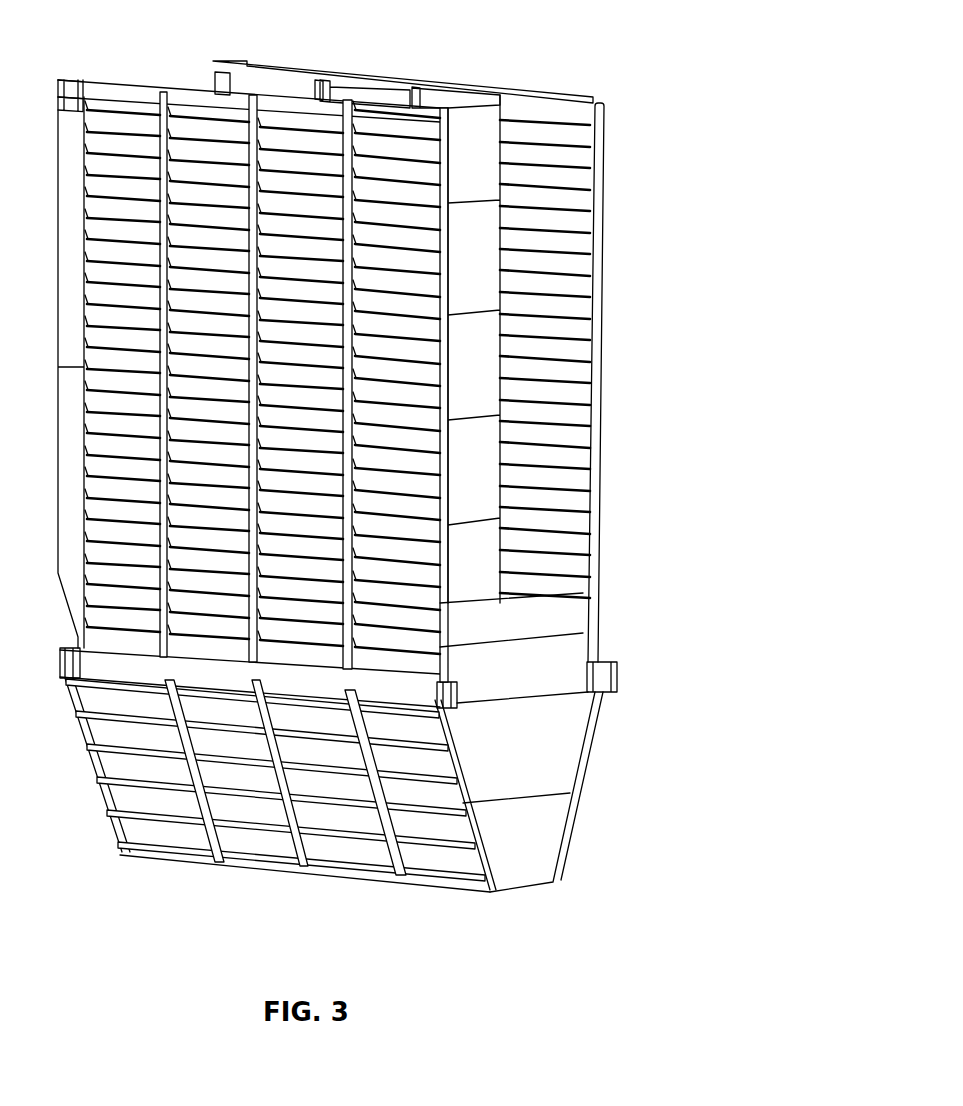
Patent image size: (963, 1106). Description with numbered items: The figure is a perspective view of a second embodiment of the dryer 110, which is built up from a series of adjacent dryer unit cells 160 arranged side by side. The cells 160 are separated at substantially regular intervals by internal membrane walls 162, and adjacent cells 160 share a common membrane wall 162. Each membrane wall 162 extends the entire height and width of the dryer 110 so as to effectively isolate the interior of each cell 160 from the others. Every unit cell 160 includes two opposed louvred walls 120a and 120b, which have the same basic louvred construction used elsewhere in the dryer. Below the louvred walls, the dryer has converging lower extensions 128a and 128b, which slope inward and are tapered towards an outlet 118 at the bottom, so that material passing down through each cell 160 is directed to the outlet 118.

The dryer 110 is at (603, 201).
The outlet 118 is at (405, 882).
The louvred wall 120a is at (390, 334).
The louvred wall 120b is at (545, 298).
The lower extension 128a is at (140, 795).
The lower extension 128b is at (568, 832).
The dryer unit cell 160 is at (392, 143).
The internal membrane wall 162 is at (475, 155).